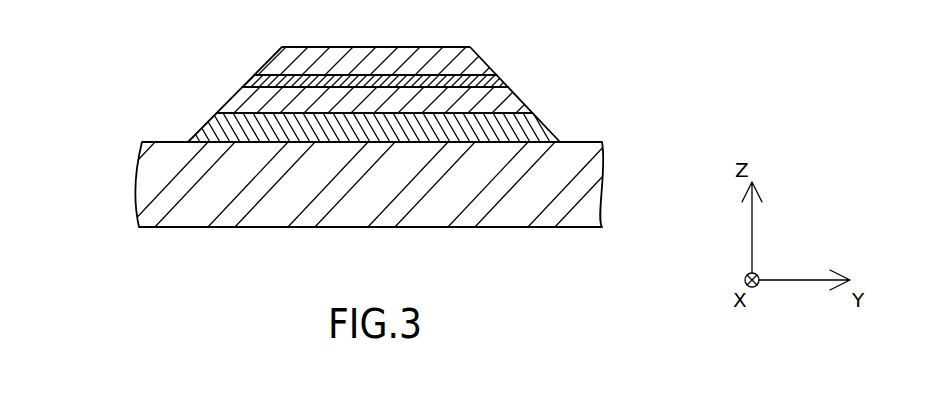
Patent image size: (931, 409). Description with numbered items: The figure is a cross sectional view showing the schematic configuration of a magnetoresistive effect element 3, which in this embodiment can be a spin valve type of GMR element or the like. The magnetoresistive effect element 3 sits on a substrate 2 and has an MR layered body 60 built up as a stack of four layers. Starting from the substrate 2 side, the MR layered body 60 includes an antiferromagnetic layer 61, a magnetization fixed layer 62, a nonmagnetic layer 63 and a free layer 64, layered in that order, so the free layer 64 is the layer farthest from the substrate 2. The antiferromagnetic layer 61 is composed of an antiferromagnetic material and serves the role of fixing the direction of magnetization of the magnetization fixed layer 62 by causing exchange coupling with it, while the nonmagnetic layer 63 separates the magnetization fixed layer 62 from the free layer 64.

The substrate 2 is at (150, 183).
The magnetoresistive effect element 3 is at (225, 106).
The MR layered body 60 is at (452, 86).
The antiferromagnetic layer 61 is at (427, 130).
The magnetization fixed layer 62 is at (512, 104).
The nonmagnetic layer 63 is at (503, 84).
The free layer 64 is at (472, 66).